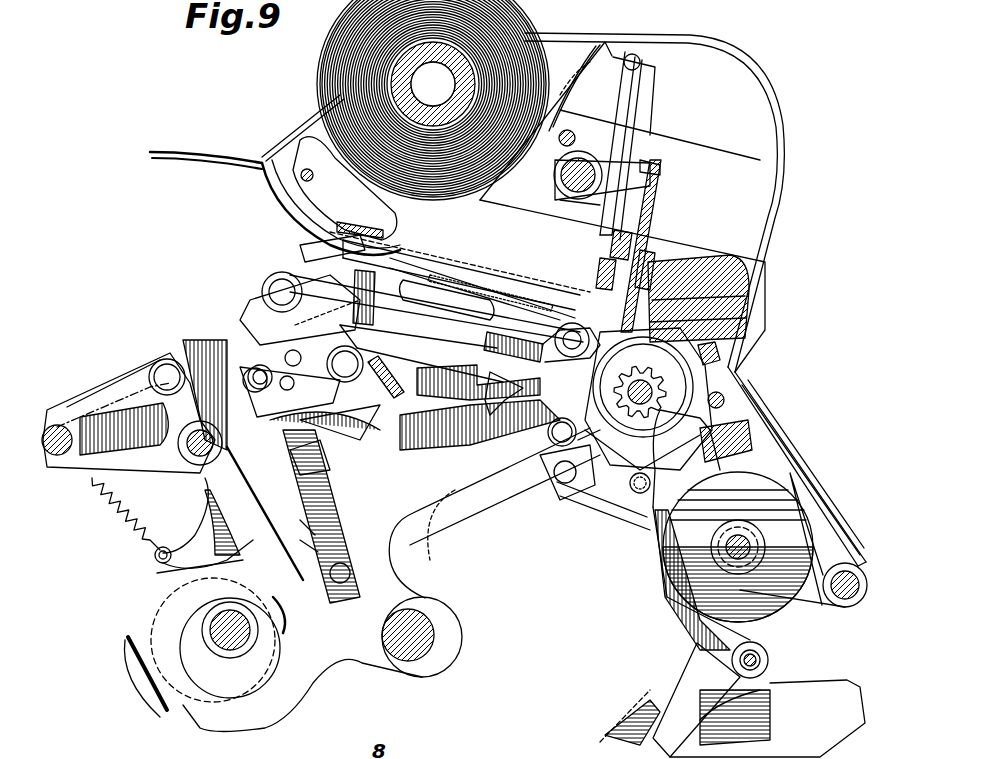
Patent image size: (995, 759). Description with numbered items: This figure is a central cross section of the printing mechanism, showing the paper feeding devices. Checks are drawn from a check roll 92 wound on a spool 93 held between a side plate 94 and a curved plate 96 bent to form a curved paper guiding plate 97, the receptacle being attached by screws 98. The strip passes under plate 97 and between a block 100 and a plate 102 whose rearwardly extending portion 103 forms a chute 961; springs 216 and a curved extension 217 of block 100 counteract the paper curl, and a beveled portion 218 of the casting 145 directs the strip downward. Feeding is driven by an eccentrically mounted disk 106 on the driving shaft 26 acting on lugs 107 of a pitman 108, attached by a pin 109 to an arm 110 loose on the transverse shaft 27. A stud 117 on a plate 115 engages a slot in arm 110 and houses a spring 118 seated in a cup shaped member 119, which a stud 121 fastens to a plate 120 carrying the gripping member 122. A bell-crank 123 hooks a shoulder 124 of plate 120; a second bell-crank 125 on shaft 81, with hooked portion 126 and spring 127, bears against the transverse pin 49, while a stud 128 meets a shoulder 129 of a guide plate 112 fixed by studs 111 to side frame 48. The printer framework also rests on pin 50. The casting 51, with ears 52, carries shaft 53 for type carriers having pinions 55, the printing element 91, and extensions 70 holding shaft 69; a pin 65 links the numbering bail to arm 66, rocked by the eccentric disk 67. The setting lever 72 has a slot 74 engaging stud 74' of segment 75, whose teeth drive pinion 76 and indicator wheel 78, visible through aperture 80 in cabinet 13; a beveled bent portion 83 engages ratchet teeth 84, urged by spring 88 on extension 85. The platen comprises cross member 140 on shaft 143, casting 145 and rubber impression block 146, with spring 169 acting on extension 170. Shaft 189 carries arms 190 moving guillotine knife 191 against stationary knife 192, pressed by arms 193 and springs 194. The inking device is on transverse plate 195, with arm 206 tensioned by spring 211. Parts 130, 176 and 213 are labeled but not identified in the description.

The cabinet 13 is at (780, 441).
The driving shaft 26 is at (215, 618).
The transverse shaft 27 is at (430, 620).
The side frame 48 is at (562, 490).
The transverse pin 49 is at (62, 425).
The pin 50 is at (840, 598).
The frame or casting 51 is at (735, 395).
The ears 52 is at (755, 435).
The shaft 53 is at (690, 382).
The pinion 55 is at (605, 450).
The pin 65 is at (556, 450).
The arm 66 is at (494, 513).
The eccentrically mounted disk 67 is at (197, 675).
The shaft 69 is at (625, 495).
The rearward integral extensions 70 is at (632, 515).
The setting lever 72 is at (760, 740).
The slot 74 is at (688, 699).
The stud 74' is at (776, 660).
The segment 75 is at (680, 620).
The pinion 76 is at (818, 502).
The indicator wheel 78 is at (772, 615).
The aperture 80 is at (805, 488).
The shaft 81 is at (195, 460).
The bent portion 83 is at (392, 377).
The ratchet teeth 84 is at (415, 407).
The downward integral extension 85 is at (205, 525).
The spring 88 is at (120, 520).
The printing element 91 is at (722, 350).
The check roll 92 is at (505, 14).
The spool 93 is at (433, 84).
The side plate 94 is at (571, 86).
The curved plate 96 is at (568, 88).
The curved paper guiding plate 97 is at (290, 215).
The screws 98 is at (575, 139).
The block 100 is at (478, 262).
The plate 102 is at (506, 308).
The rearwardly extending portion 103 is at (341, 244).
The eccentrically mounted disk 106 is at (158, 612).
The lugs 107 is at (120, 690).
The pitman 108 is at (330, 572).
The pin 109 is at (301, 545).
The arm 110 is at (312, 498).
The studs 111 is at (262, 322).
The guide plate 112 is at (421, 353).
The plate 115 is at (262, 290).
The stud 117 is at (363, 364).
The spring 118 is at (327, 312).
The cup shaped member 119 is at (372, 332).
The plate 120 is at (380, 320).
The stud 121 is at (447, 300).
The gripping member 122 is at (354, 294).
The bell-crank 123 is at (290, 392).
The shoulder 124 is at (340, 425).
The hooked portion 126 is at (310, 457).
The second bell-crank 125 is at (250, 460).
The spring 127 is at (120, 452).
The stud 128 is at (294, 362).
The shoulder 129 is at (540, 366).
The rail 130 is at (420, 255).
The cross member 140 is at (778, 250).
The shaft 143 is at (300, 122).
The casting 145 is at (748, 302).
The rubber impression block 146 is at (748, 325).
The spring 169 is at (575, 210).
The integral extension 170 is at (575, 196).
The pin 176 is at (728, 403).
The shaft 189 is at (565, 183).
The forwardly extending arms 190 is at (655, 190).
The slidable guillotine knife 191 is at (640, 212).
The stationary knife 192 is at (599, 274).
The arms 193 is at (690, 245).
The springs 194 is at (741, 532).
The transverse plate 195 is at (636, 135).
The arm 206 is at (640, 150).
The spring 211 is at (642, 60).
The cover edge 213 is at (625, 34).
The springs 216 is at (505, 268).
The curved extension 217 is at (652, 262).
The beveled portion 218 is at (625, 232).
The chute 961 is at (275, 200).